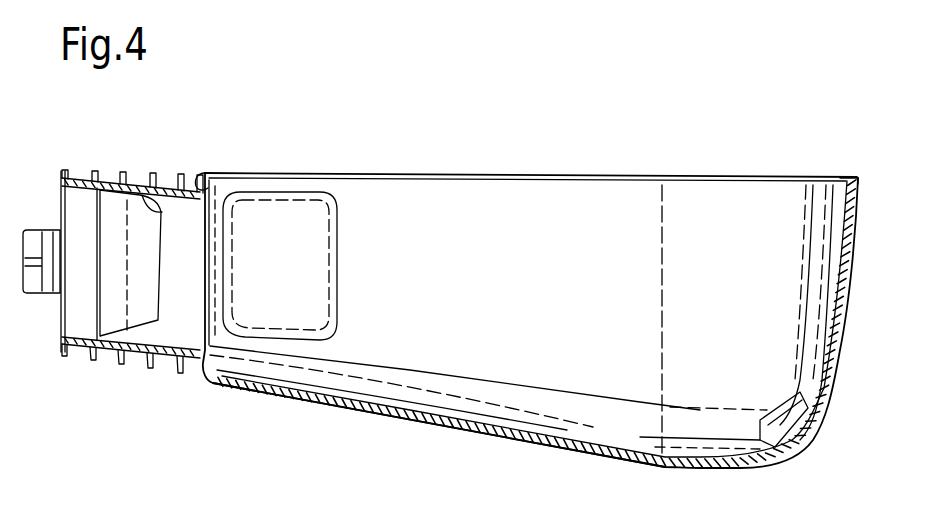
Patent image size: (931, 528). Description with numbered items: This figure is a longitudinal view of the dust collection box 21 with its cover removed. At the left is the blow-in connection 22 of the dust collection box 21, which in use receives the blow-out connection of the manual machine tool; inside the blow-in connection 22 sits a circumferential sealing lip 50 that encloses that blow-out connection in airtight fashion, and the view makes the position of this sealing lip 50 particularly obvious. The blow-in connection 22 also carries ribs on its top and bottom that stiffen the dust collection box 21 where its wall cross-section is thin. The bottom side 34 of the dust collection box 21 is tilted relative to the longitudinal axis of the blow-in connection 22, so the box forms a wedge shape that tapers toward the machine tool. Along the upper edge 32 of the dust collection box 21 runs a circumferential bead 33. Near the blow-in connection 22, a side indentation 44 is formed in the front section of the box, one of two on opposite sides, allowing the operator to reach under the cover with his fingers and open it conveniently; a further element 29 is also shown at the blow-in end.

The dust collection box 21 is at (638, 150).
The blow-in connection 22 is at (94, 307).
The plug 29 is at (38, 229).
The upper edge 32 is at (497, 175).
The circumferential bead 33 is at (855, 176).
The bottom side 34 is at (486, 437).
The side indentation 44 is at (305, 265).
The circumferential sealing lip 50 is at (141, 195).